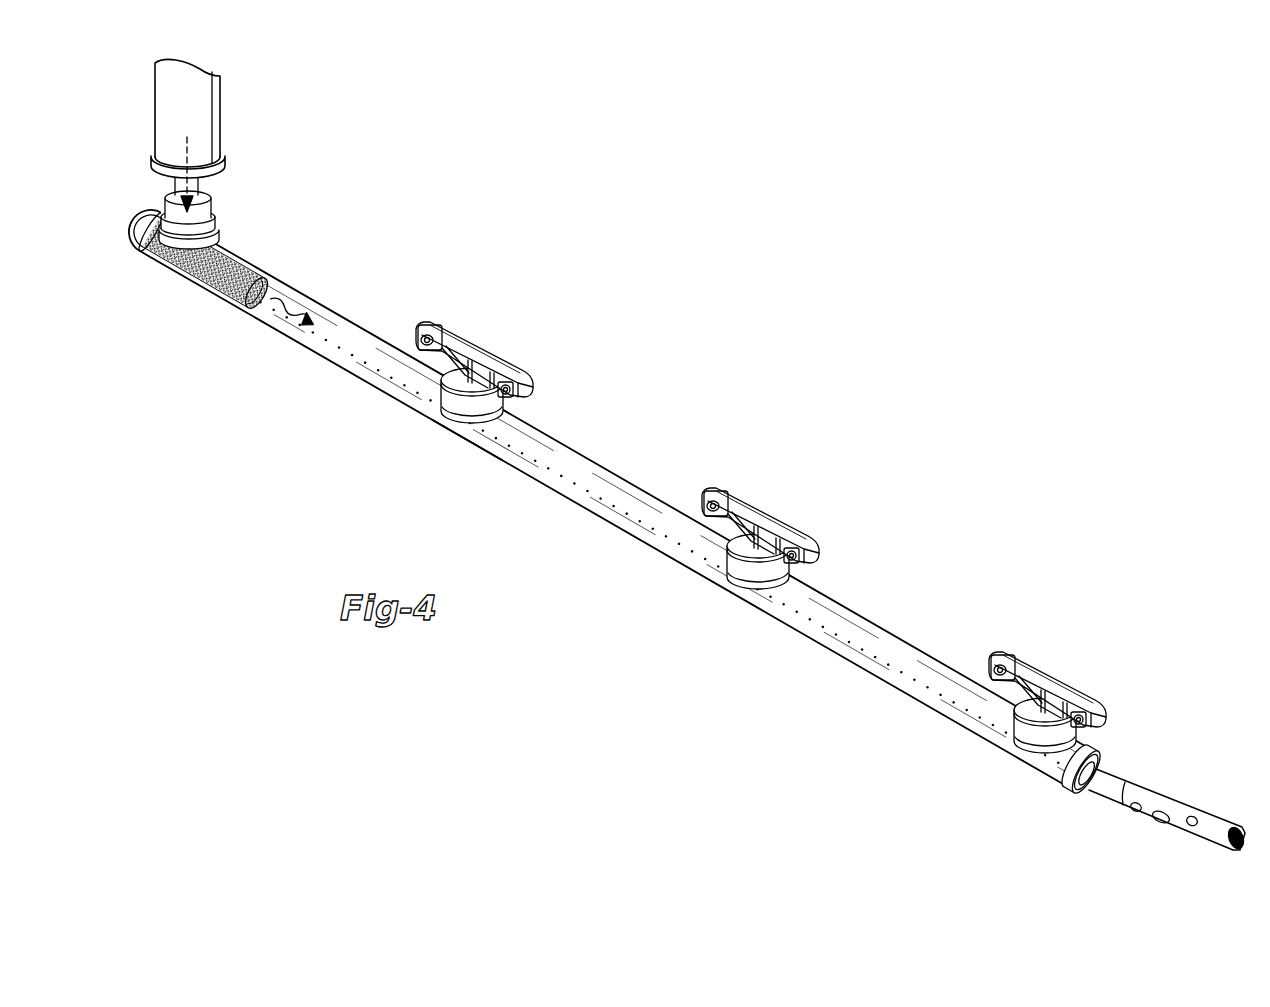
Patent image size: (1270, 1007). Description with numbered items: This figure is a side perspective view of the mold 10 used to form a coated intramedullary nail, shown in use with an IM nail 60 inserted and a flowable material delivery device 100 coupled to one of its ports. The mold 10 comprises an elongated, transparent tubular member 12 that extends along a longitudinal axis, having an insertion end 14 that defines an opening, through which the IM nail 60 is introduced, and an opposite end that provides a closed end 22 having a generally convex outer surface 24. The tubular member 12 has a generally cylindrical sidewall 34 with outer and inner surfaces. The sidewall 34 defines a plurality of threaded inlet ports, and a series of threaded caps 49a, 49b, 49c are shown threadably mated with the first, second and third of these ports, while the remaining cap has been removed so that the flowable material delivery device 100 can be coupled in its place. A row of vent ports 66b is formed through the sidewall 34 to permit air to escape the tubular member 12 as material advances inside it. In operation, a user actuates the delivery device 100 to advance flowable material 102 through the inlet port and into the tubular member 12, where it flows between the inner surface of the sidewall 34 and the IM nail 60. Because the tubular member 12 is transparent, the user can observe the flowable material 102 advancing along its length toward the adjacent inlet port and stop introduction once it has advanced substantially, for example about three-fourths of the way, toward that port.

The mold 10 is at (812, 398).
The tubular member 12 is at (561, 448).
The insertion end 14 is at (1118, 757).
The closed end 22 is at (133, 233).
The convex outer surface 24 is at (142, 212).
The sidewall 34 is at (494, 451).
The threaded cap 49a is at (1018, 656).
The threaded cap 49b is at (727, 490).
The threaded cap 49c is at (448, 321).
The IM nail 60 is at (1178, 802).
The vent ports 66b is at (587, 490).
The flowable material delivery device 100 is at (199, 137).
The flowable material 102 is at (251, 268).